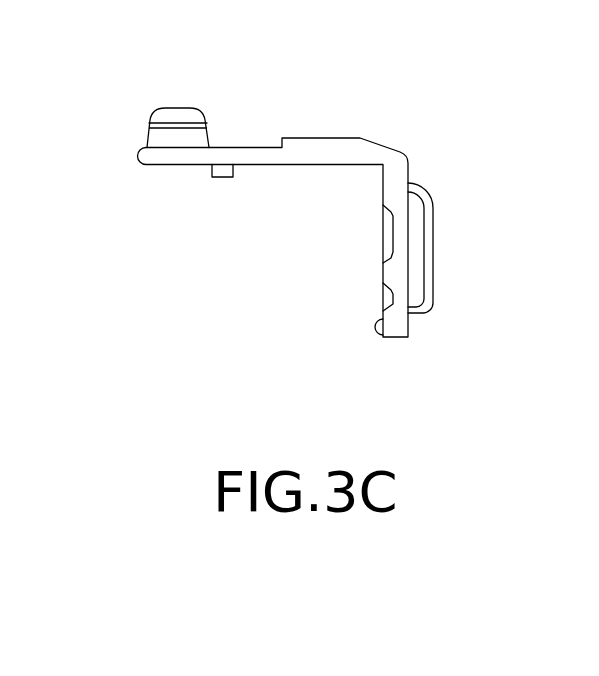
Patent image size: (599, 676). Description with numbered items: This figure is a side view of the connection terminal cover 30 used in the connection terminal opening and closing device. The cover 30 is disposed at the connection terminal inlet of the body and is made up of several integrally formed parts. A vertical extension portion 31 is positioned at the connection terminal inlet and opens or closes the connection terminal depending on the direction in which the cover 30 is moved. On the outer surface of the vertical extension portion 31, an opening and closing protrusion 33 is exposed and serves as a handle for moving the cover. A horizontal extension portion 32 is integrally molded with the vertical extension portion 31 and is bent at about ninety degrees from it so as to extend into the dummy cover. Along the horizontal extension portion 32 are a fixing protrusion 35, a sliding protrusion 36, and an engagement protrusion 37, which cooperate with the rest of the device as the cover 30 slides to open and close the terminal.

The connection terminal cover 30 is at (520, 165).
The vertical extension portion 31 is at (395, 277).
The horizontal extension portion 32 is at (321, 153).
The opening and closing protrusion 33 is at (427, 217).
The fixing protrusion 35 is at (177, 113).
The sliding protrusion 36 is at (137, 153).
The engagement protrusion 37 is at (222, 172).